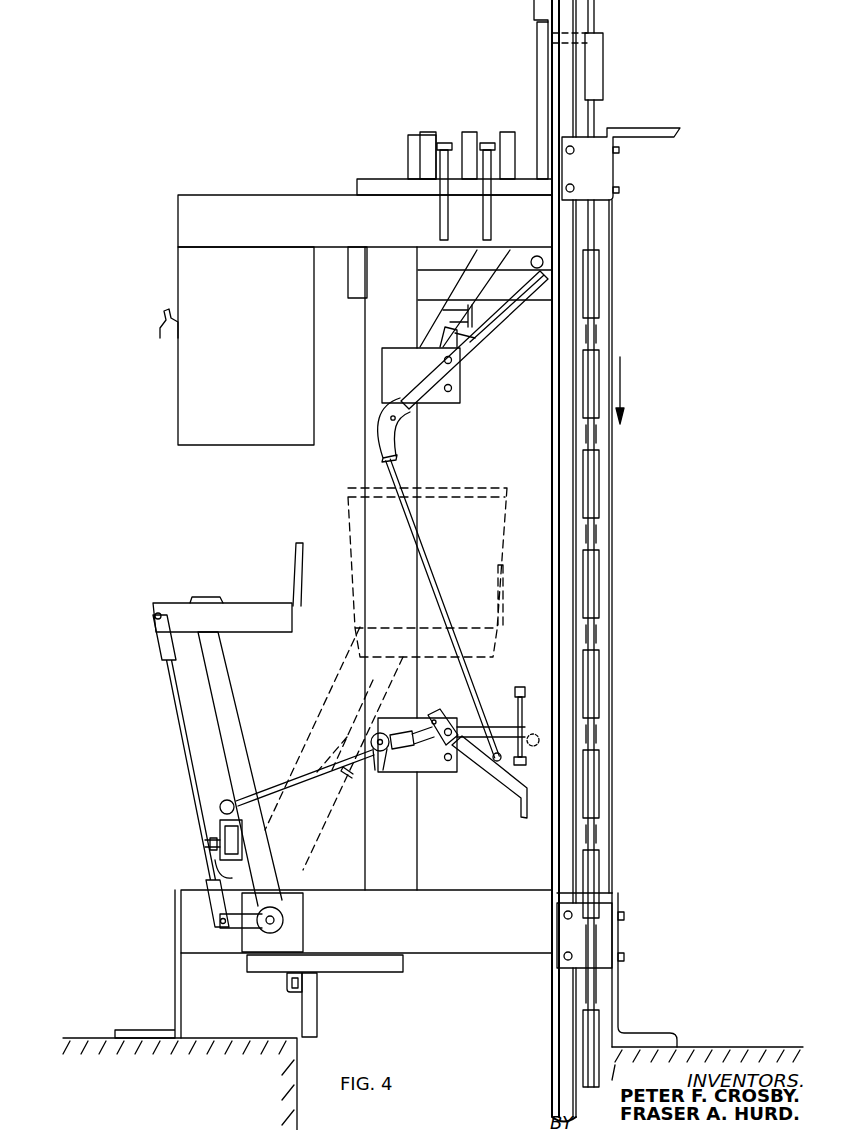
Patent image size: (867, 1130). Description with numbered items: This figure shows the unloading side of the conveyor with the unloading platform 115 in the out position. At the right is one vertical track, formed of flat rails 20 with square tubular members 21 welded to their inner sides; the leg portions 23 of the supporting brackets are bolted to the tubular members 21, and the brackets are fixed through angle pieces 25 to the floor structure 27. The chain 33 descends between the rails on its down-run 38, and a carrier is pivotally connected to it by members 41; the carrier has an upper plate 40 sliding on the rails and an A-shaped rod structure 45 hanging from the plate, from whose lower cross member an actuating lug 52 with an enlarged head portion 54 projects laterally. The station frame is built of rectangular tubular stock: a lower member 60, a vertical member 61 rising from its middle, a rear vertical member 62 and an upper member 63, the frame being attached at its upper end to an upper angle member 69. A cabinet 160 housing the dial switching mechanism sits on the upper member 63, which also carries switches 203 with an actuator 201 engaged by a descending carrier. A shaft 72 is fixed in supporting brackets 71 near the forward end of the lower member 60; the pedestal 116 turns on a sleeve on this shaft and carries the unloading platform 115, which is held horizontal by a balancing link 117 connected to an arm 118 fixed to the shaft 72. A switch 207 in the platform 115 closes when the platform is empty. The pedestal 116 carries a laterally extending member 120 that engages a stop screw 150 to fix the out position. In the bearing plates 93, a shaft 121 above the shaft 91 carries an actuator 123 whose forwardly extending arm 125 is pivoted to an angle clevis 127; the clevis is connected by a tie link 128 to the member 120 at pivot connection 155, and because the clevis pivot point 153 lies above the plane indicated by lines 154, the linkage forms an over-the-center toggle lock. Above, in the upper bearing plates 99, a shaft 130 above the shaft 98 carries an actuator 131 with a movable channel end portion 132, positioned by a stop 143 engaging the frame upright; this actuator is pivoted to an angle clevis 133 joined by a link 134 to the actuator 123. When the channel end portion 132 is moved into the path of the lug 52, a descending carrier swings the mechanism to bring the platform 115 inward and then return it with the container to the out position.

The rails 20 is at (553, 995).
The square tubular members 21 is at (565, 1032).
The leg portions 23 is at (590, 930).
The angle pieces 25 is at (642, 1030).
The floor structure 27 is at (720, 1045).
The chain 33 is at (599, 500).
The down-run 38 is at (600, 471).
The upper plate 40 is at (535, 23).
The members 41 is at (596, 42).
The A-shaped rod structure 45 is at (537, 105).
The actuating lug 52 is at (545, 262).
The enlarged head portions 54 is at (533, 733).
The lower member 60 is at (333, 964).
The vertical member 61 is at (416, 852).
The rear vertical member 62 is at (612, 632).
The upper member 63 is at (365, 213).
The upper angle member 69 is at (640, 137).
The supporting brackets 71 is at (292, 943).
The shaft 72 is at (274, 920).
The shaft 91 is at (445, 759).
The bearing plates 93 is at (417, 748).
The shaft 98 is at (452, 391).
The upper bearing plates 99 is at (421, 375).
The unloading platform 115 is at (255, 612).
The pedestal 116 is at (233, 752).
The balancing link 117 is at (187, 752).
The arm 118 is at (240, 918).
The laterally extending member 120 is at (223, 853).
The shaft 121 is at (446, 722).
The actuator 123 is at (468, 754).
The forwardly extending arm 125 is at (423, 718).
The angle clevis 127 is at (376, 772).
The tie link 128 is at (296, 790).
The shaft 130 is at (452, 362).
The actuator 131 is at (466, 340).
The movable channel end portion 132 is at (508, 298).
The angle clevis 133 is at (378, 436).
The link 134 is at (428, 560).
The stop 143 is at (474, 322).
The stop screws 150 is at (207, 845).
The pivot point 153 is at (372, 738).
The lines 154 is at (500, 722).
The pivot connections 155 is at (169, 338).
The cabinet 160 is at (246, 346).
The actuator 201 is at (488, 220).
The switches 203 is at (446, 142).
The switch 207 is at (210, 598).